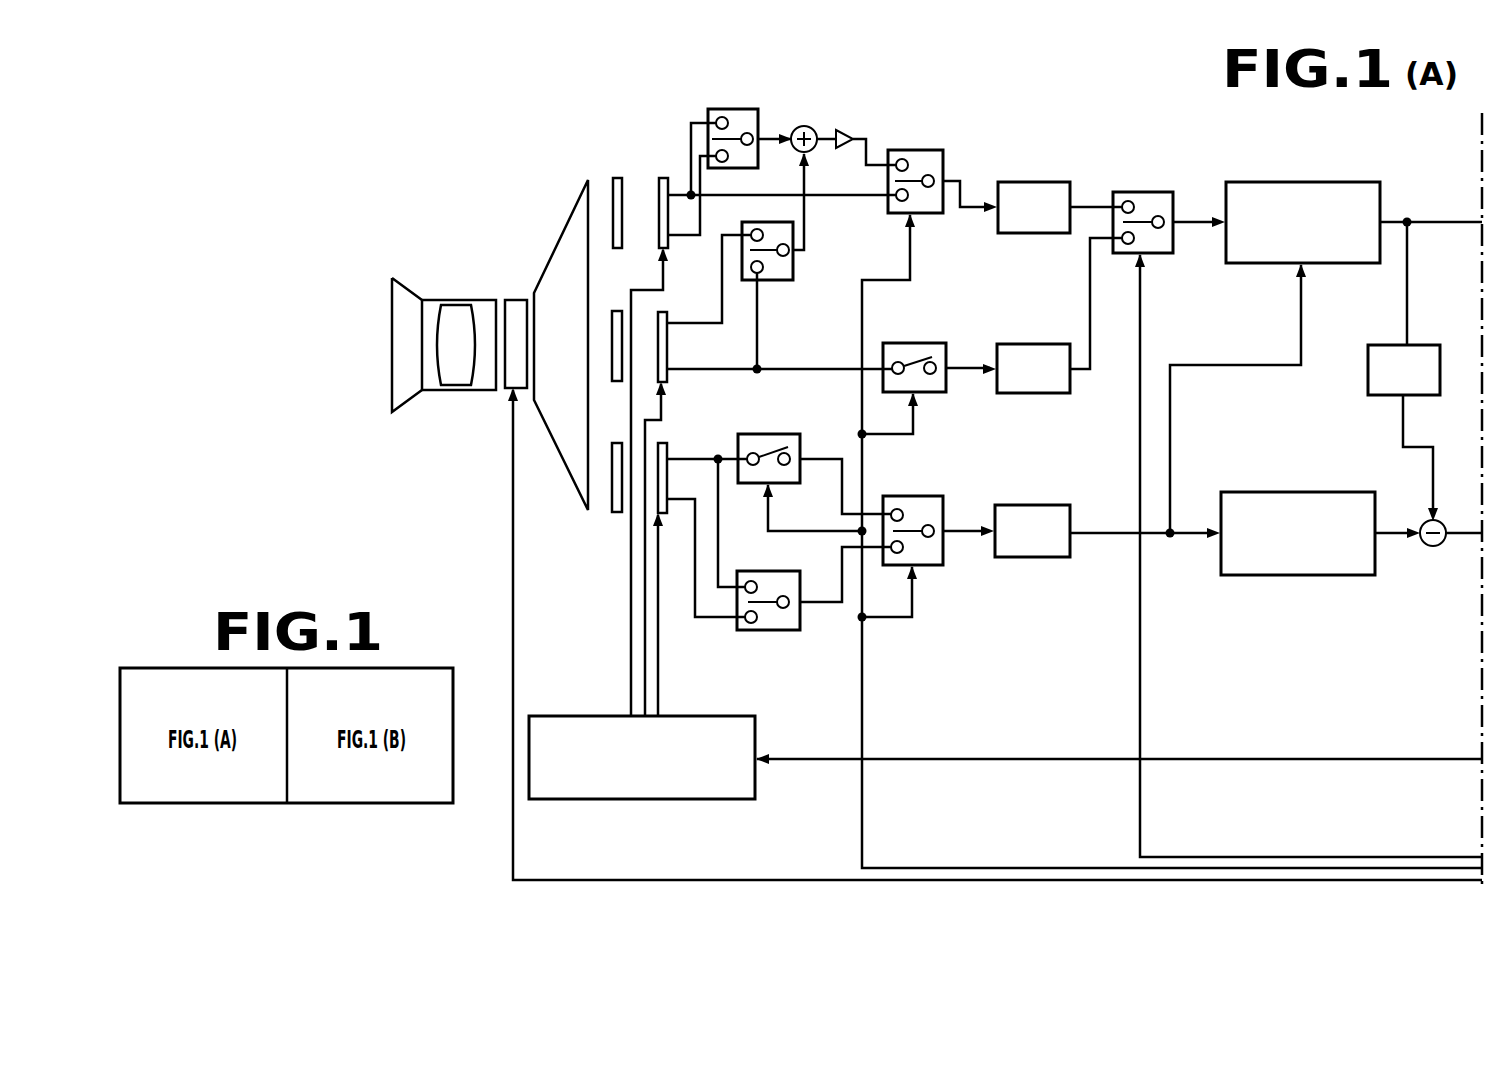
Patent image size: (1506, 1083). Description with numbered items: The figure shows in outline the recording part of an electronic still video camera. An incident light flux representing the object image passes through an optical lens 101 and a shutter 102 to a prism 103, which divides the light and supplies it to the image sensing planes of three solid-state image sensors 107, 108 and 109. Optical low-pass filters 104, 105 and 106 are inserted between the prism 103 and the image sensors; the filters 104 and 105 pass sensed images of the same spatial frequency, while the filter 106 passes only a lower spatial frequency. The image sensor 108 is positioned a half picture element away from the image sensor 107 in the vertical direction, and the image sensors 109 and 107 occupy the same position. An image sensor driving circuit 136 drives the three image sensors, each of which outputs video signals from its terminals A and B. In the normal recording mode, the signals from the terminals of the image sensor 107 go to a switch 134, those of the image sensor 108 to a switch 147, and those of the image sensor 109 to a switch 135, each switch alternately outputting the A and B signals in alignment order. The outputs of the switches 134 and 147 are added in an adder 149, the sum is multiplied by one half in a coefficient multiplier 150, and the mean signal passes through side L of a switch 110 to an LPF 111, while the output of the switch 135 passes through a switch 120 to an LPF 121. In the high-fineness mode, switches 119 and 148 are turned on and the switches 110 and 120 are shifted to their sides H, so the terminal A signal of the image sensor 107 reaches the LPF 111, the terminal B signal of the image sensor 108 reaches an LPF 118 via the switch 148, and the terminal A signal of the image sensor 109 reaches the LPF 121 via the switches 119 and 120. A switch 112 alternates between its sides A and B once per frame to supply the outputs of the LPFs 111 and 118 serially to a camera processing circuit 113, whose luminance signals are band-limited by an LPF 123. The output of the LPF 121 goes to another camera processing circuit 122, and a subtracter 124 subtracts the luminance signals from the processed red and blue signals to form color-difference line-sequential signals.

The optical lens 101 is at (430, 310).
The shutter 102 is at (514, 300).
The prism 103 is at (566, 222).
The optical low-pass filter 104 is at (618, 178).
The optical low-pass filter 105 is at (612, 325).
The optical low-pass filter 106 is at (609, 505).
The solid-state image sensor 107 is at (662, 178).
The solid-state image sensor 108 is at (667, 381).
The solid-state image sensor 109 is at (669, 516).
The switch 110 is at (932, 150).
The LPF 111 is at (1038, 182).
The switch 112 is at (1140, 192).
The camera processing circuit 113 is at (1380, 190).
The LPF 118 is at (1056, 344).
The switch 119 is at (800, 437).
The switch 120 is at (943, 496).
The LPF 121 is at (1052, 558).
The camera processing circuit 122 is at (1250, 492).
The LPF 123 is at (1368, 360).
The subtracter 124 is at (1433, 546).
The switch 134 is at (740, 109).
The switch 135 is at (760, 632).
The image sensor driving circuit 136 is at (570, 716).
The switch 147 is at (788, 282).
The switch 148 is at (900, 343).
The adder 149 is at (810, 126).
The coefficient multiplier 150 is at (844, 150).